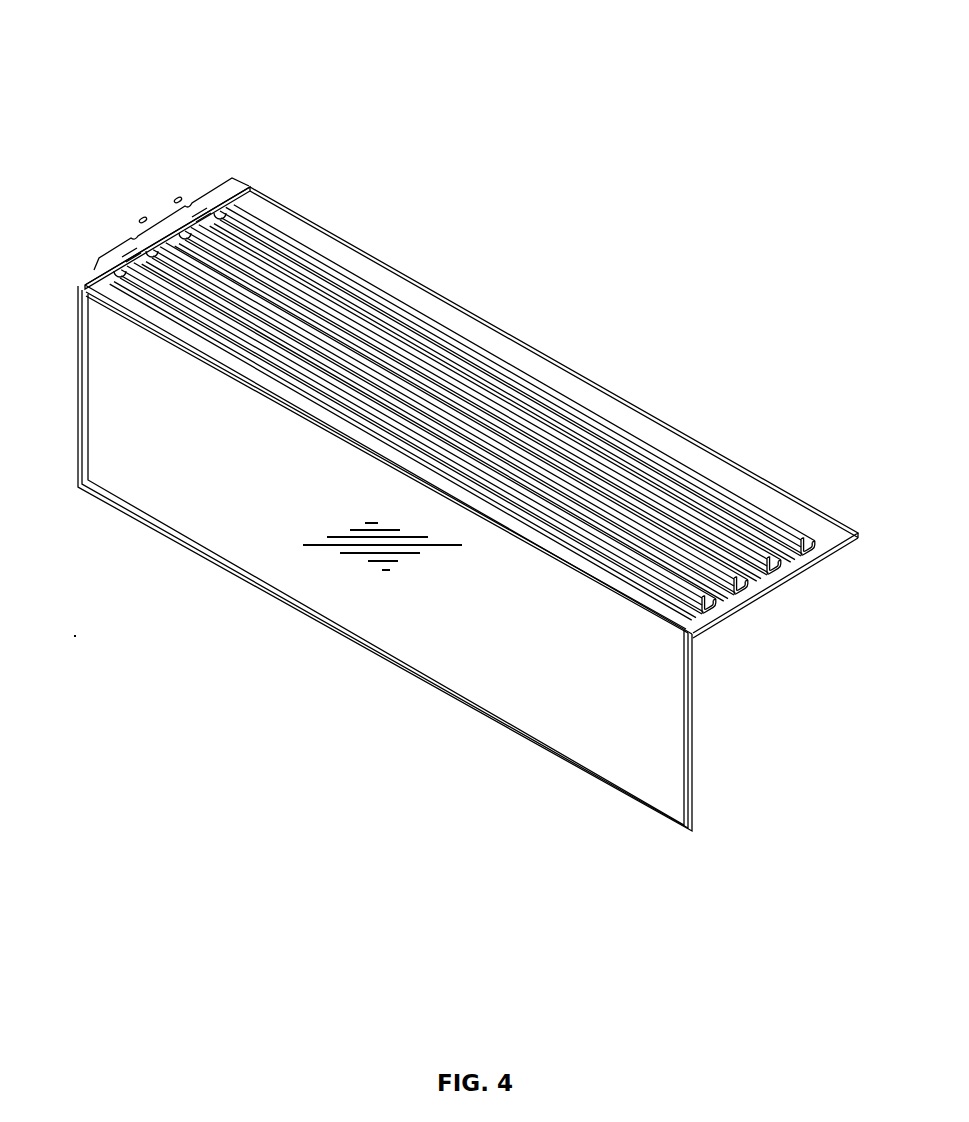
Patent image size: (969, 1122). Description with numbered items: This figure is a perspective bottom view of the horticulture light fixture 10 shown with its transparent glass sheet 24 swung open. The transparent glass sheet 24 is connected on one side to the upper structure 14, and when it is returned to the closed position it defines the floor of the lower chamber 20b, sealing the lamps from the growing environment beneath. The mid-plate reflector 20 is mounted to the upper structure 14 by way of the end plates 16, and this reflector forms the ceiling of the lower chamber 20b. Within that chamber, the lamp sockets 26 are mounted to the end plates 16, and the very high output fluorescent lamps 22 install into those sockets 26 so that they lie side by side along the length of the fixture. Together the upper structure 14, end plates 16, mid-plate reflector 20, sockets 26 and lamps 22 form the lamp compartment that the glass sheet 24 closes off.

The horticulture light fixture 10 is at (333, 55).
The upper structure 14 is at (357, 229).
The end plates 16 is at (230, 188).
The mid-plate reflector 20 is at (542, 364).
The lower chamber 20b is at (731, 490).
The very high output (VHO) fluorescent lamp 22 is at (699, 620).
The transparent glass sheet 24 is at (707, 806).
The lamp sockets 26 is at (117, 268).